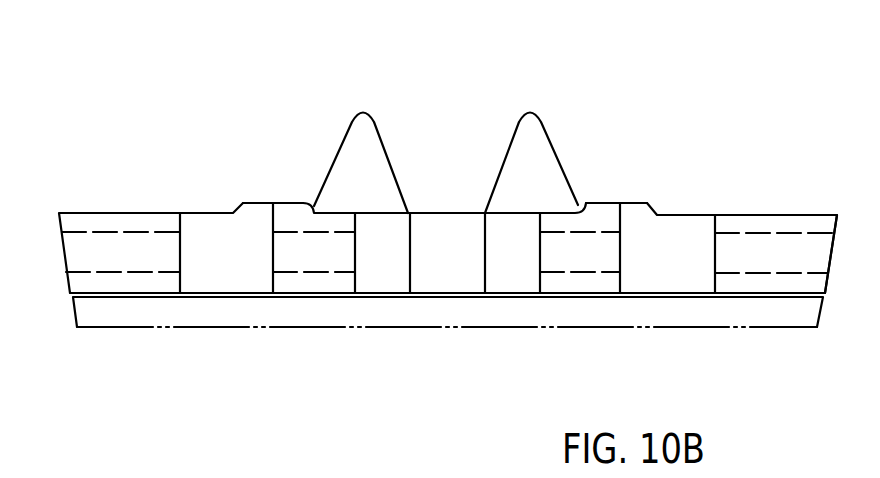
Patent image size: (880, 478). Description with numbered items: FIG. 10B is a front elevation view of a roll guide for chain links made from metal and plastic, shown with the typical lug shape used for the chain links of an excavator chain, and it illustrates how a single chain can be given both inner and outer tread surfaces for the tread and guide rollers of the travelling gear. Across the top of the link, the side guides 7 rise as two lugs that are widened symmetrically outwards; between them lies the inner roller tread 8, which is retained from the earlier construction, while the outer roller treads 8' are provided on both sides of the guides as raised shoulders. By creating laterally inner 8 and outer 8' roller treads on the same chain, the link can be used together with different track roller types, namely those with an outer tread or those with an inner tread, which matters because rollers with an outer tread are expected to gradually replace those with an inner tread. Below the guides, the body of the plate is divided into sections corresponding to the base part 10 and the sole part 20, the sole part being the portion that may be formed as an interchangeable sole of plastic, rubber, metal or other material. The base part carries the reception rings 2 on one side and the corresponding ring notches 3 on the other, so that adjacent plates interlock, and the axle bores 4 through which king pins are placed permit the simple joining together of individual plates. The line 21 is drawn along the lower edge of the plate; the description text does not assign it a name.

The reception rings 2 is at (110, 283).
The ring notches 3 is at (208, 278).
The axle bores 4 is at (777, 243).
The side guides 7 is at (363, 102).
The inner roller tread 8 is at (447, 210).
The outer roller treads 8' is at (445, 163).
The base part 10 is at (118, 204).
The sole part 20 is at (447, 346).
The symmetry line 21 is at (387, 320).